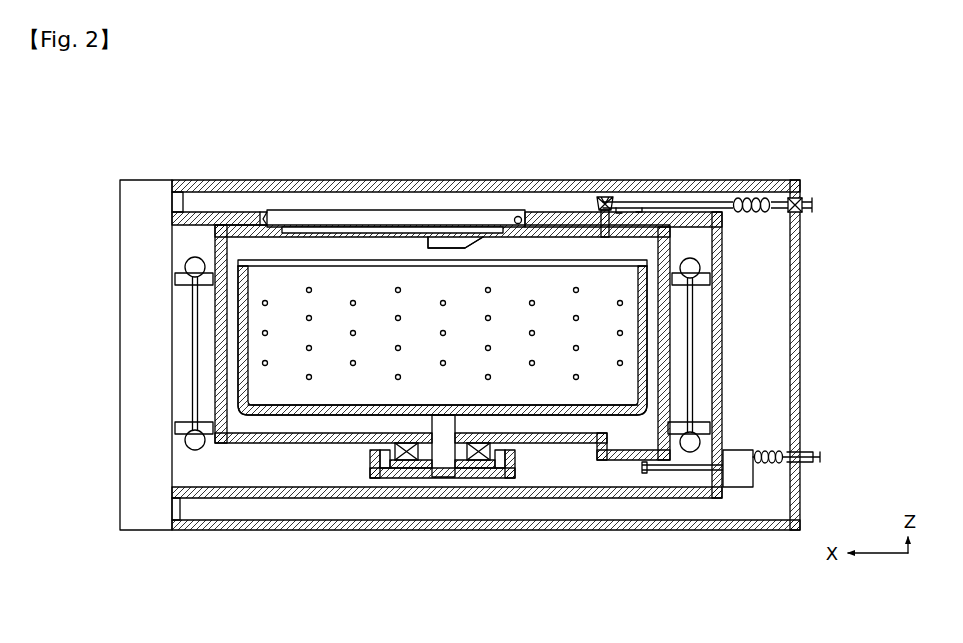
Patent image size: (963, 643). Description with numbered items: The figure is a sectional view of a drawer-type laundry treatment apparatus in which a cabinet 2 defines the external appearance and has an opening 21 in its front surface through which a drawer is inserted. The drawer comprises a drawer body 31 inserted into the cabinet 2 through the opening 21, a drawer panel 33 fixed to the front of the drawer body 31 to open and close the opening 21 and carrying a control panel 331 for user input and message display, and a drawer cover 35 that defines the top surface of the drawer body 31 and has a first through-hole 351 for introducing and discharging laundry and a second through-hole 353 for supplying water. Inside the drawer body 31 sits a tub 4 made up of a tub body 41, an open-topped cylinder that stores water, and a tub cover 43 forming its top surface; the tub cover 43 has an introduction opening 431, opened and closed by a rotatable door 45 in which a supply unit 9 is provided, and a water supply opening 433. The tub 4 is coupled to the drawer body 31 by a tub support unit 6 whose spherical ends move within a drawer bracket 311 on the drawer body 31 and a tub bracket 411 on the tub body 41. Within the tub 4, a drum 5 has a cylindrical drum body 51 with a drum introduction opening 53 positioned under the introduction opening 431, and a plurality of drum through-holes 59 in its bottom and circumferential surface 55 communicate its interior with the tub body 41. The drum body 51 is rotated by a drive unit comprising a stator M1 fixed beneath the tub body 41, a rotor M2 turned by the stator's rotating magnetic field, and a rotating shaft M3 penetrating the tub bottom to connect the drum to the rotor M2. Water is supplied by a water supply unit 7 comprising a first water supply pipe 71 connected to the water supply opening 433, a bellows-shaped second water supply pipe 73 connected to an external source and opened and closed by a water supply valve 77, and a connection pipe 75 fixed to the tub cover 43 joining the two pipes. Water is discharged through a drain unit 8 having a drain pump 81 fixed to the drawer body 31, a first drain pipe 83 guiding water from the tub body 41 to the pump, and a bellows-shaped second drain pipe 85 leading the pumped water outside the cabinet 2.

The cabinet 2 is at (486, 358).
The opening 21 is at (178, 200).
The drawer panel 33 is at (123, 329).
The control panel 331 is at (132, 183).
The drawer body 31 is at (462, 313).
The drawer bracket 311 is at (708, 278).
The drawer cover 35 is at (236, 177).
The first through-hole 351 is at (265, 218).
The door 45 is at (390, 218).
The tub 4 is at (446, 358).
The tub body 41 is at (223, 310).
The tub bracket 411 is at (707, 430).
The tub cover 43 is at (253, 238).
The introduction opening 431 is at (442, 183).
The water supply opening 433 is at (578, 220).
The drum introduction opening 53 is at (412, 230).
The supply unit 9 is at (452, 243).
The tub support unit 6 is at (188, 360).
The drum 5 is at (442, 448).
The drum body 51 is at (260, 417).
The circumferential surface 55 is at (245, 360).
The drum through-holes 59 is at (353, 366).
The stator M1 is at (451, 501).
The rotor M2 is at (470, 470).
The rotating shaft M3 is at (442, 465).
The water supply unit 7 is at (697, 163).
The first water supply pipe 71 is at (618, 205).
The connection pipe 75 is at (640, 210).
The second water supply pipe 73 is at (758, 203).
The water supply valve 77 is at (796, 200).
The second through-hole 353 is at (600, 183).
The drain unit 8 is at (731, 536).
The drain pump 81 is at (698, 471).
The first drain pipe 83 is at (743, 477).
The second drain pipe 85 is at (777, 464).